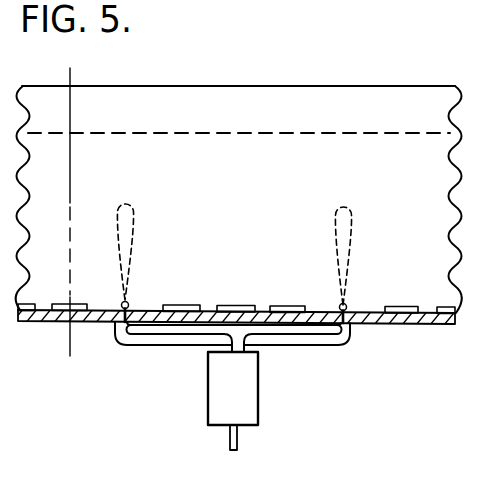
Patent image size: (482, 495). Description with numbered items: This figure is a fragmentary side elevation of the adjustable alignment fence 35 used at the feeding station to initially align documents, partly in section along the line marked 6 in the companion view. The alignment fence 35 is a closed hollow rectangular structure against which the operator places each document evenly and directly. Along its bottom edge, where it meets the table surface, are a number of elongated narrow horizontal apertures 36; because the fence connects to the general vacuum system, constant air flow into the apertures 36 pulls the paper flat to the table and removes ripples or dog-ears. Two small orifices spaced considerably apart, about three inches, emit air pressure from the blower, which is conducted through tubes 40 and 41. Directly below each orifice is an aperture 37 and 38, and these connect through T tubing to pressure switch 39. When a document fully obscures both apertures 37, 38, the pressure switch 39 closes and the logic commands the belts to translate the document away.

The section line 6- 6 is at (70, 68).
The alignment fence 35 is at (239, 199).
The elongated narrow horizontal apertures 36 is at (28, 305).
The aperture 37 is at (133, 294).
The aperture 38 is at (349, 309).
The pressure switch 39 is at (232, 386).
The tube 40 is at (134, 240).
The tube 41 is at (352, 244).